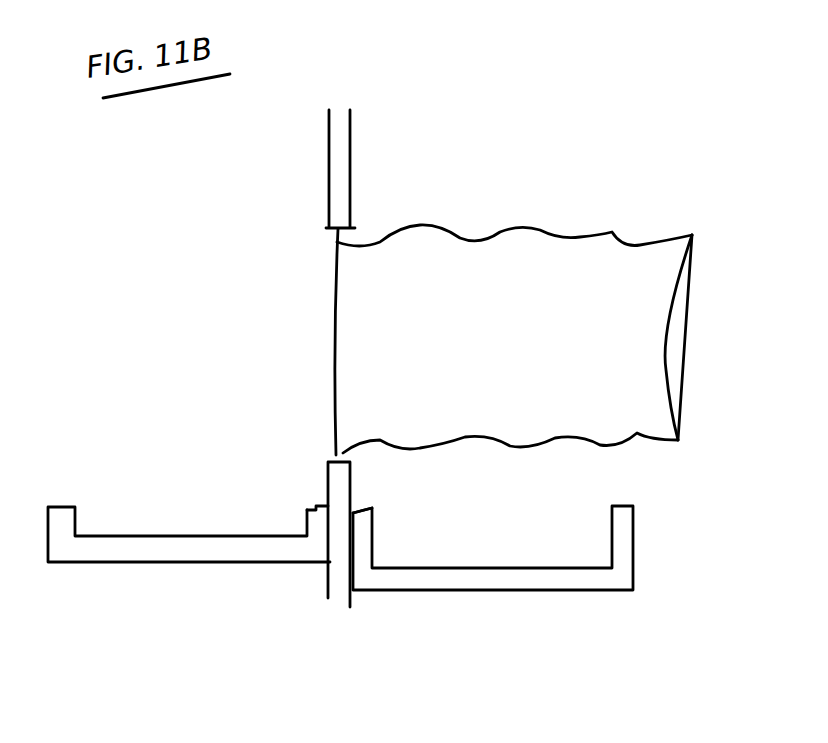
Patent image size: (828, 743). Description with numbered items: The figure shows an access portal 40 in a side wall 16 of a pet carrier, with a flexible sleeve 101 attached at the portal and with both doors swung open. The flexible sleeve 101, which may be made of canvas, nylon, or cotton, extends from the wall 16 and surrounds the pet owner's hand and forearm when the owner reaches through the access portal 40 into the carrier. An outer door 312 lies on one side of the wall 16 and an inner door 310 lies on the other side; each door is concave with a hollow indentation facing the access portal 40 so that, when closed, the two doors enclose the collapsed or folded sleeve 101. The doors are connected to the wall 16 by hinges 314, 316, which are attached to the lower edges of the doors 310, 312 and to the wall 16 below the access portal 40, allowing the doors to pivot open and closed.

The side wall 16 is at (340, 188).
The access portal 40 is at (322, 344).
The flexible sleeve 101 is at (553, 290).
The inner door 310 is at (474, 572).
The outer door 312 is at (140, 545).
The hinge 314 is at (357, 508).
The hinge 316 is at (328, 504).